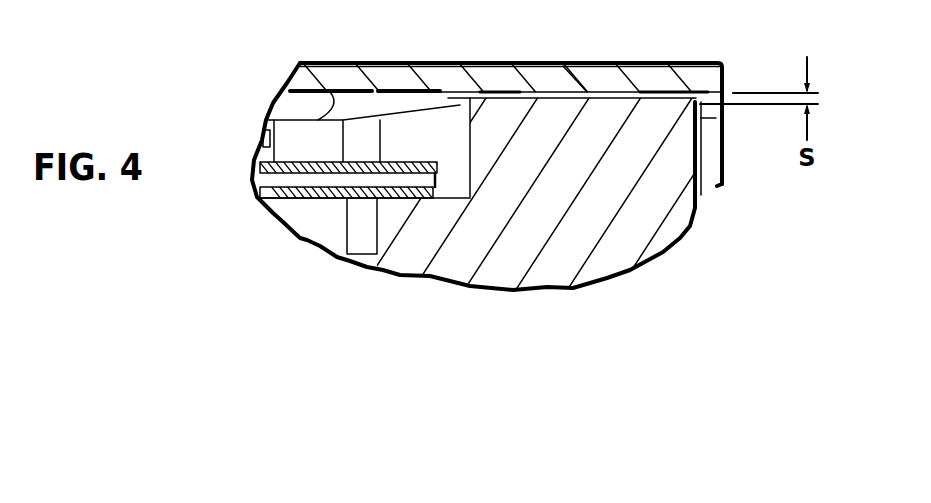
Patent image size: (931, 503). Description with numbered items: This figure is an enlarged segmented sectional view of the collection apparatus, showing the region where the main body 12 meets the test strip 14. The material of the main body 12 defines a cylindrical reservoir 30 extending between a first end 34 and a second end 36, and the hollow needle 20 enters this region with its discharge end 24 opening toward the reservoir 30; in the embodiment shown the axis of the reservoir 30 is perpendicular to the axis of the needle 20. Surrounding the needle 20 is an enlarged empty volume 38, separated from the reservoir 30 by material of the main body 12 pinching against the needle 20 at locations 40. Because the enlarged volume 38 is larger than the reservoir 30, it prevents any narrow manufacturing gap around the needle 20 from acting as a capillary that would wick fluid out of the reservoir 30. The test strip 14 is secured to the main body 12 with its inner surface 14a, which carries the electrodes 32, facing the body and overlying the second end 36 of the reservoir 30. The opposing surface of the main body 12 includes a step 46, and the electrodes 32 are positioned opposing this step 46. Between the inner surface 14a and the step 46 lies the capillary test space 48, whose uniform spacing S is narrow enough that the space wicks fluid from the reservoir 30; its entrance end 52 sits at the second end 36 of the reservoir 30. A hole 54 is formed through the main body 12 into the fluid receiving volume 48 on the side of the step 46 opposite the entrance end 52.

The main body 12 is at (609, 292).
The test strip 14 is at (652, 78).
The inner surface 14a is at (726, 98).
The hollow needle 20 is at (308, 199).
The discharge end 24 is at (433, 176).
The cylindrical reservoir 30 is at (393, 124).
The electrodes 32 is at (517, 89).
The first end 34 is at (453, 200).
The second end 36 is at (462, 116).
The enlarged empty volume 38 is at (325, 232).
The locations 40 is at (380, 144).
The step 46 is at (652, 101).
The capillary test space 48 is at (585, 92).
The entrance end 52 is at (478, 107).
The hole 54 is at (702, 176).